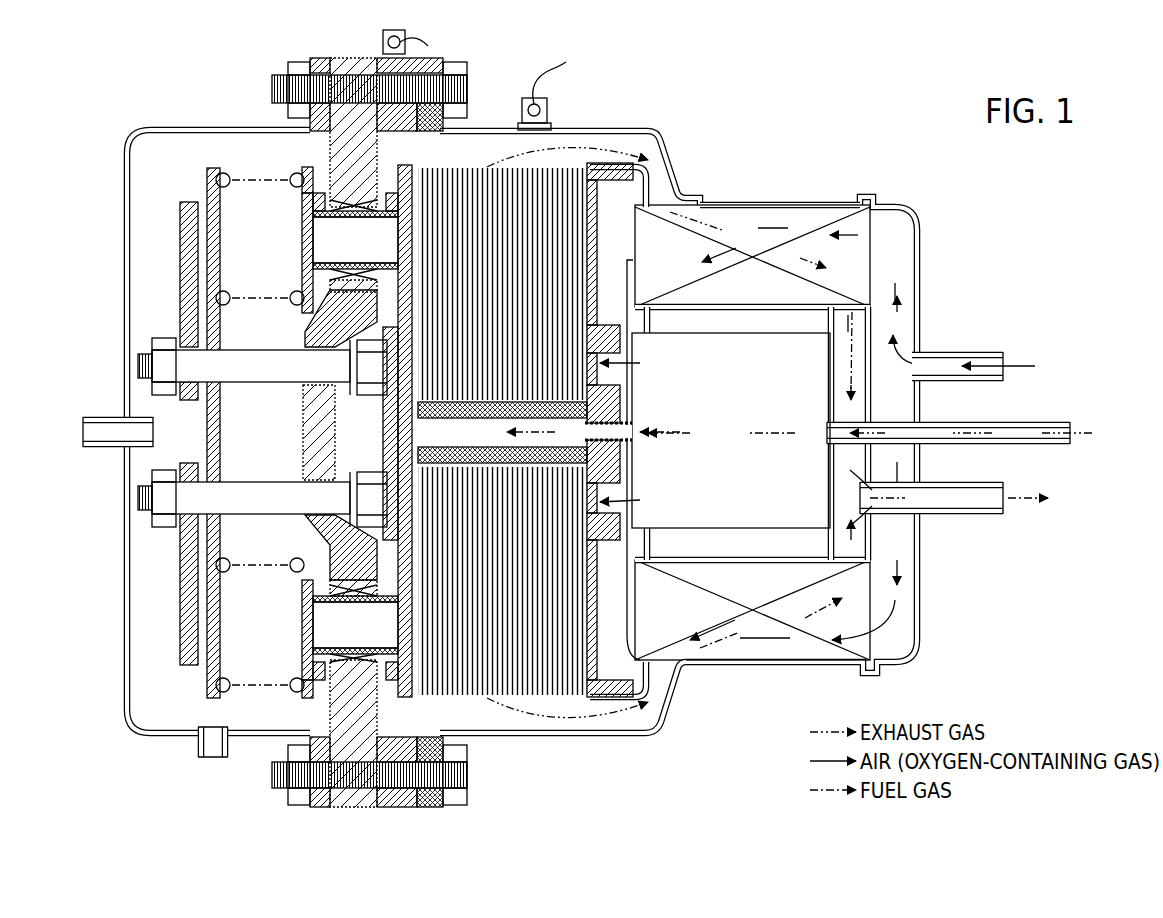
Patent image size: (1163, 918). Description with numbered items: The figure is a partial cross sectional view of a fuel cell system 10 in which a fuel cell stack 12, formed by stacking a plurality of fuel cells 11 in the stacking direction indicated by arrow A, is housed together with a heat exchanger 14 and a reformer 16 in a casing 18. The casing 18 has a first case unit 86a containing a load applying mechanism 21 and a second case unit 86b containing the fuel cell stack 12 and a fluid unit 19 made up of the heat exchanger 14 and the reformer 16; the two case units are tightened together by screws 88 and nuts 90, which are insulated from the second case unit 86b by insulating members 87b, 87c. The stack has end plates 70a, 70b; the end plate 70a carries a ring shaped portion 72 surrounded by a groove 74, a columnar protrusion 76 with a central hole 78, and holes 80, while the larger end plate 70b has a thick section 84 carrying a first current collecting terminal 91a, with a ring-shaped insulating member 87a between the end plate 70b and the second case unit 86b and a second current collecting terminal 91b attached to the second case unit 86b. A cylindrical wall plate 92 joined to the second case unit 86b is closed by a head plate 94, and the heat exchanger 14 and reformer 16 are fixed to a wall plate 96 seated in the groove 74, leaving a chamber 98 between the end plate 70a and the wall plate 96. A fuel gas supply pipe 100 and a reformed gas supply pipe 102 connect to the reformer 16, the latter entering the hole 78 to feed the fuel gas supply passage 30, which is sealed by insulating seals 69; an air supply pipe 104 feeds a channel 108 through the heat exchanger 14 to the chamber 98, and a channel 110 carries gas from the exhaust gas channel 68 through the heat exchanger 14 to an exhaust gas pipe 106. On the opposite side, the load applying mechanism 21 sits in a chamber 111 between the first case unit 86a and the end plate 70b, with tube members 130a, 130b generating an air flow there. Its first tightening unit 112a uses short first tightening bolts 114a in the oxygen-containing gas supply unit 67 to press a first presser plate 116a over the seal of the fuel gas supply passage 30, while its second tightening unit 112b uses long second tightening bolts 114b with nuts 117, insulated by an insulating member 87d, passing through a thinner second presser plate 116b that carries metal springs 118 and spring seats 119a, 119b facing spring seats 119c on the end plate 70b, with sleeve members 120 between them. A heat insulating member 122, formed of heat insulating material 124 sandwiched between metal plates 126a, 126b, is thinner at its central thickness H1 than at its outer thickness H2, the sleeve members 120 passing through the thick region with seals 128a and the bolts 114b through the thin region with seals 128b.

The fuel cell system 10 is at (1010, 174).
The fuel cell 11 is at (513, 700).
The fuel cell stack 12 is at (570, 152).
The heat exchanger 14 is at (822, 226).
The reformer 16 is at (755, 345).
The casing 18 is at (702, 186).
The fluid unit 19 is at (853, 156).
The load applying mechanism 21 is at (296, 429).
The fuel gas supply passage 30 is at (620, 395).
The oxygen-containing gas supply unit 67 is at (560, 372).
The exhaust gas channel 68 is at (566, 712).
The insulating seal 69 is at (436, 446).
The end plate 70a is at (603, 266).
The end plate 70b is at (462, 730).
The ring shaped portion 72 is at (671, 706).
The groove 74 is at (644, 720).
The columnar protrusion 76 is at (632, 446).
The hole 78 is at (632, 462).
The hole 80 is at (620, 490).
The thick section 84 is at (386, 806).
The first case unit 86a is at (232, 128).
The second case unit 86b is at (488, 131).
The ring-shaped insulating member 87a is at (420, 806).
The insulating member 87b is at (456, 806).
The insulating member 87c is at (452, 790).
The insulating member 87d is at (164, 346).
The screw 88 is at (456, 74).
The nut 90 is at (282, 82).
The first current collecting terminal 91a is at (382, 42).
The second current collecting terminal 91b is at (548, 108).
The cylindrical wall plate 92 is at (741, 665).
The head plate 94 is at (919, 592).
The wall plate 96 is at (652, 182).
The chamber 98 is at (656, 675).
The fuel gas supply pipe 100 is at (1033, 423).
The reformed gas supply pipe 102 is at (640, 425).
The air supply pipe 104 is at (963, 344).
The exhaust gas pipe 106 is at (968, 514).
The channel 108 is at (887, 268).
The channel 110 is at (790, 608).
The chamber 111 is at (145, 642).
The first tightening unit 112a is at (294, 432).
The second tightening unit 112b is at (205, 526).
The first tightening bolt 114a is at (347, 366).
The second tightening bolt 114b is at (140, 366).
The first presser plate 116a is at (381, 451).
The second presser plate 116b is at (180, 294).
The nut 117 is at (179, 545).
The metal spring 118 is at (249, 695).
The spring seat 119a is at (305, 630).
The spring seat 119b is at (213, 682).
The spring seat 119c is at (400, 626).
The sleeve member 120 is at (313, 213).
The heat insulating member 122 is at (312, 327).
The heat insulating material 124 is at (346, 708).
The metal plate 126a is at (311, 545).
The metal plate 126b is at (312, 578).
The seal 128a is at (355, 240).
The seal 128b is at (304, 346).
The tube member 130a is at (106, 419).
The tube member 130b is at (199, 748).
The thickness of central region H1 is at (358, 465).
The thickness of outer region H2 is at (402, 152).
The stacking direction A is at (762, 790).